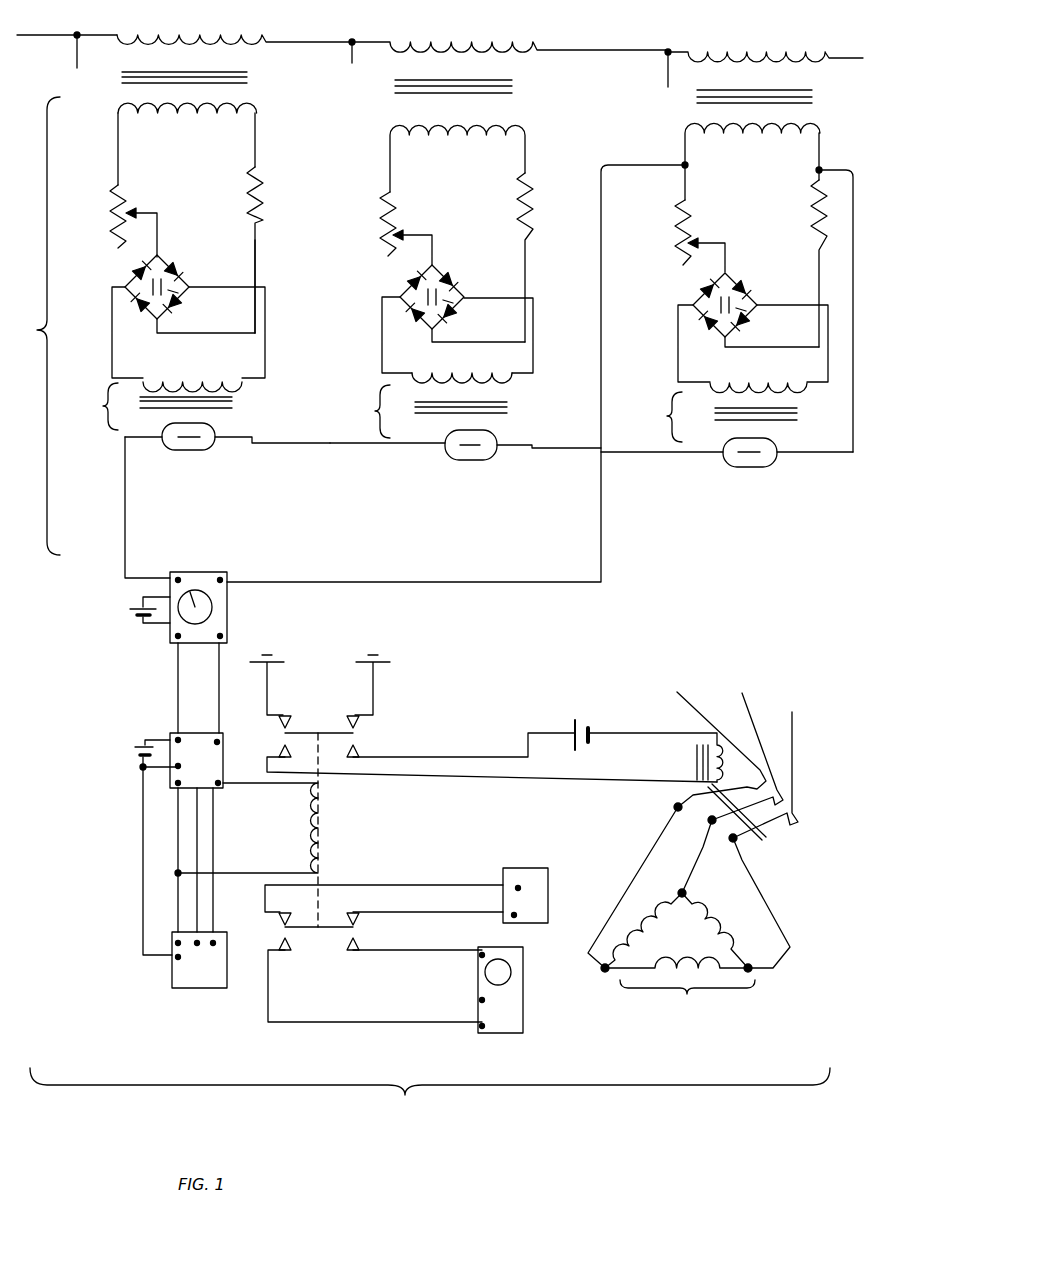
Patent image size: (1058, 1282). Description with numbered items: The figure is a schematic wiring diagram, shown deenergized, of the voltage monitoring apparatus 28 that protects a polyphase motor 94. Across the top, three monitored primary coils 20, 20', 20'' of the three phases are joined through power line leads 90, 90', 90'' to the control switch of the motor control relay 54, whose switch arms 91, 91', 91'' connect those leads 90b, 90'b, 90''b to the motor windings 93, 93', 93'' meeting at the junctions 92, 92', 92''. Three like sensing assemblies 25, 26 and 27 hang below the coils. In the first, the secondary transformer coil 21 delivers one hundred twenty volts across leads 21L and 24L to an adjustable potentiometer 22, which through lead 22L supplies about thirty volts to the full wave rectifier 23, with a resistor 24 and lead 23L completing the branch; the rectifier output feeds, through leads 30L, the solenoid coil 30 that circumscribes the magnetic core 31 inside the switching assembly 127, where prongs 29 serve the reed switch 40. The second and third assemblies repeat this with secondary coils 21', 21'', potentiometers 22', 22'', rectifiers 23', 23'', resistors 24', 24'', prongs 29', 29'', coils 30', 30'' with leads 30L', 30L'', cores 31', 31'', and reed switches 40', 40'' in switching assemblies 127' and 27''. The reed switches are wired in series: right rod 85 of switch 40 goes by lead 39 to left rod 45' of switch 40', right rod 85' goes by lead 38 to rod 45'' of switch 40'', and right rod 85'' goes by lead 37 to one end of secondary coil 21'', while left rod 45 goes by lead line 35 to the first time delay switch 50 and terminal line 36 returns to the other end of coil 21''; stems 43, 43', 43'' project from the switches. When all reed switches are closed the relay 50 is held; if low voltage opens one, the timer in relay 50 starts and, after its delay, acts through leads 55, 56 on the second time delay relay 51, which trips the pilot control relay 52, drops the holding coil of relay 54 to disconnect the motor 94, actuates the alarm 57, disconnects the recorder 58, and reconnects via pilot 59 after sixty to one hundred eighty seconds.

The primary coil 20 is at (234, 46).
The primary coil 20' is at (510, 54).
The primary coil 20'' is at (765, 64).
The power line lead 90 is at (67, 50).
The power line lead 90' is at (325, 51).
The power line lead 90'' is at (648, 68).
The secondary transformer coil 21 is at (187, 120).
The secondary coil 21' is at (457, 158).
The secondary coil 21'' is at (752, 161).
The secondary coil lead 21L is at (113, 148).
The adjustable potentiometer 22 is at (135, 212).
The adjustable potentiometer 22' is at (406, 228).
The adjustable potentiometer 22'' is at (701, 235).
The potentiometer lead 22L is at (160, 220).
The rectifier 23 is at (166, 272).
The rectifier 23' is at (439, 290).
The rectifier 23'' is at (736, 300).
The rectifier lead 23L is at (256, 243).
The resistor 24 is at (268, 250).
The resistor 24' is at (500, 257).
The resistor 24'' is at (787, 263).
The secondary coil lead 24L is at (256, 140).
The sensing assembly 25 is at (33, 326).
The sensing assembly 26 is at (384, 147).
The sensing assembly 27 is at (651, 133).
The switching assembly 27'' is at (651, 417).
The apparatus 28 is at (430, 1095).
The prong 29 is at (192, 299).
The prong 29' is at (470, 315).
The prong 29'' is at (762, 320).
The solenoid coil 30 is at (192, 370).
The solenoid coil 30' is at (462, 367).
The solenoid coil 30'' is at (758, 375).
The coil lead 30L is at (181, 332).
The coil lead 30L' is at (457, 335).
The coil lead 30L'' is at (753, 343).
The magnetic core 31 is at (206, 404).
The magnetic core 31' is at (487, 401).
The magnetic core 31'' is at (776, 404).
The switching assembly 127 is at (88, 406).
The switching assembly 127' is at (360, 411).
The lead line 35 is at (122, 505).
The terminal line 36 is at (398, 582).
The lead 37 is at (848, 168).
The lead 38 is at (643, 452).
The lead 39 is at (335, 443).
The reed switch 40 is at (169, 433).
The reed switch 40' is at (443, 439).
The reed switch 40'' is at (732, 446).
The contact lead 43 is at (191, 469).
The contact lead (second phase) 43' is at (472, 493).
The contact lead (third phase) 43'' is at (750, 497).
The terminal rod 45 is at (143, 454).
The terminal rod 45' is at (418, 474).
The terminal rod 45'' is at (712, 478).
The terminal rod 85 is at (272, 453).
The terminal rod 85' is at (549, 459).
The terminal rod 85'' is at (815, 471).
The first time delay switch 50 is at (222, 572).
The second time delay switch 51 is at (179, 844).
The relay activated switch 52 is at (338, 843).
The motor control relay 54 is at (696, 767).
The lead 55 is at (175, 660).
The lead 56 is at (222, 662).
The alarm 57 is at (504, 868).
The recorder 58 is at (478, 1000).
The pilot 59 is at (180, 976).
The power line lead 90b is at (715, 742).
The power line lead 90'b is at (747, 750).
The power line lead 90''b is at (753, 768).
The switch arm 91 is at (699, 854).
The switch arm 91' is at (635, 882).
The switch arm 91'' is at (759, 901).
The motor terminal 92 is at (583, 944).
The motor terminal 92' is at (664, 887).
The motor terminal 92'' is at (783, 932).
The motor coil 93 is at (643, 930).
The motor coil 93' is at (676, 973).
The motor coil 93'' is at (715, 930).
The polyphase motor 94 is at (687, 996).